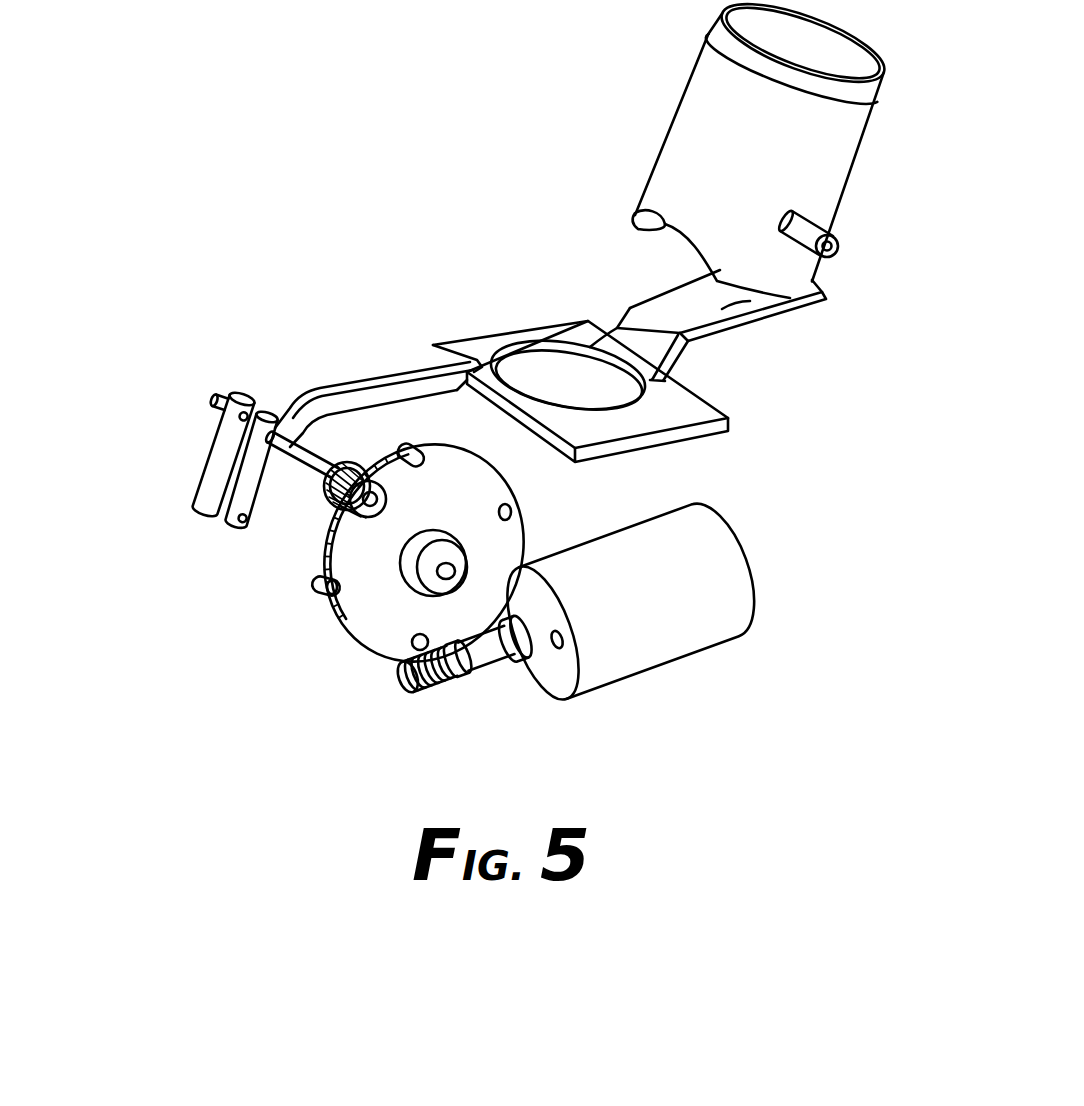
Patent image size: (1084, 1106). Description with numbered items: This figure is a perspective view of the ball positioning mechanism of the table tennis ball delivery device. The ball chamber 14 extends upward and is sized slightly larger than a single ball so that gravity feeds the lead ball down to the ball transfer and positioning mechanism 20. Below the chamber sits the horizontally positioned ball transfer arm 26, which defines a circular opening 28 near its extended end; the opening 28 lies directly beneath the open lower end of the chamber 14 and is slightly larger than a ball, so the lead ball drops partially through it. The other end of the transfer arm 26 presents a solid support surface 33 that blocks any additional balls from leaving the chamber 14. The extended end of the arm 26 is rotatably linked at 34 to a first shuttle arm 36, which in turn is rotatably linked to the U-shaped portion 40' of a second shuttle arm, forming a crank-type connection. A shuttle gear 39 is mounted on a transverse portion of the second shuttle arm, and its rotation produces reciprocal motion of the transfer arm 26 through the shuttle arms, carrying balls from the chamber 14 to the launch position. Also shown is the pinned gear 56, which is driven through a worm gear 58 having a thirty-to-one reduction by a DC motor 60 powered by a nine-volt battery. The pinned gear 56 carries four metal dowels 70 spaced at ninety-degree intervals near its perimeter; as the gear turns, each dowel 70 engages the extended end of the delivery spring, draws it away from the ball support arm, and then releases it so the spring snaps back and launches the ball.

The ball chamber 14 is at (848, 167).
The ball transfer and positioning mechanism 20 is at (460, 323).
The ball transfer arm 26 is at (697, 386).
The circular opening 28 is at (557, 375).
The solid support surface 33 is at (790, 322).
The rotatable link 34 is at (430, 343).
The first shuttle arm 36 is at (357, 375).
The shuttle gear 39 is at (337, 513).
The U-shaped portion 40' is at (187, 457).
The pinned gear 56 is at (517, 489).
The worm gear 58 is at (447, 686).
The DC motor 60 is at (693, 657).
The metal dowels 70 is at (410, 442).